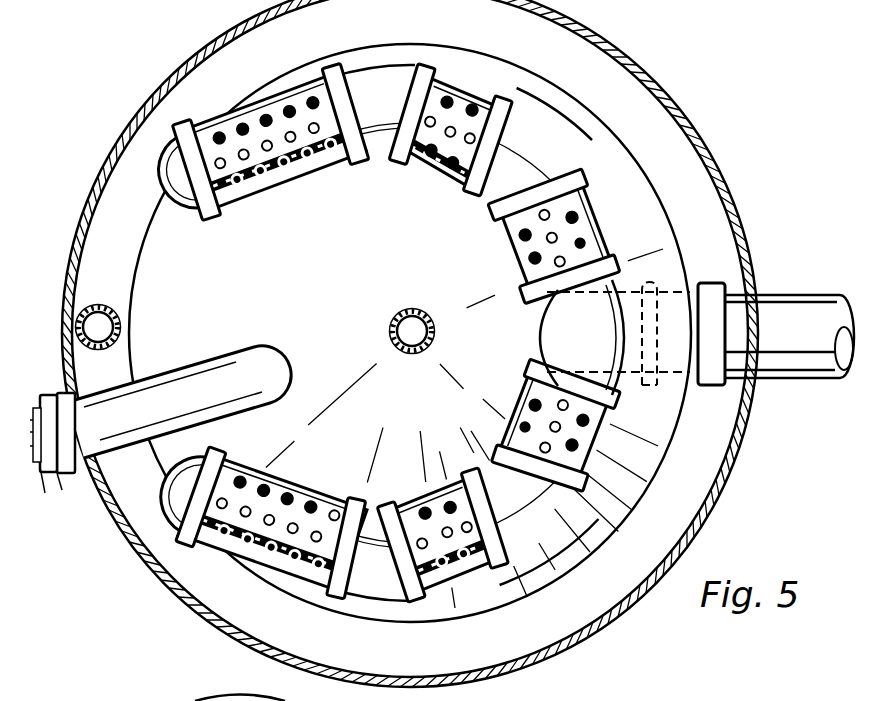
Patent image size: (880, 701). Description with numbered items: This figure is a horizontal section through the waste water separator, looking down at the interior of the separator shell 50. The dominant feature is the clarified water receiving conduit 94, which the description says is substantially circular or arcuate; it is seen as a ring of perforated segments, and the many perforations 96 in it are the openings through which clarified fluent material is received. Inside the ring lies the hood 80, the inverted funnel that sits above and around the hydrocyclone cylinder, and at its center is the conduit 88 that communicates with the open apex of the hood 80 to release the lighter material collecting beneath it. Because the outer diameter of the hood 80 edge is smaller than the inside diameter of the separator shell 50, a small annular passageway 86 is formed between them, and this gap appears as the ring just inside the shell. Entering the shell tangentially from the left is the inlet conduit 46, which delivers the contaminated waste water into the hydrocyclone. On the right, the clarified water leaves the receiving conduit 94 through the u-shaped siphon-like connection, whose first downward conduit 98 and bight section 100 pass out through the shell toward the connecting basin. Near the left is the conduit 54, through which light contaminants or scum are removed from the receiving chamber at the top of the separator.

The inlet conduit 46 is at (86, 700).
The separator shell 50 is at (742, 465).
The conduit 54 is at (120, 327).
The hood 80 is at (252, 306).
The annular passageway 86 is at (400, 662).
The conduit 88 is at (414, 309).
The clarified water receiving conduit 94 is at (386, 332).
The perforations 96 is at (346, 166).
The first downward conduit 98 is at (530, 317).
The bight section 100 is at (816, 305).